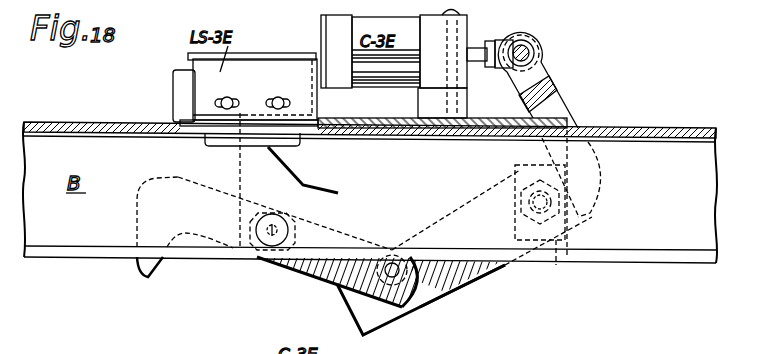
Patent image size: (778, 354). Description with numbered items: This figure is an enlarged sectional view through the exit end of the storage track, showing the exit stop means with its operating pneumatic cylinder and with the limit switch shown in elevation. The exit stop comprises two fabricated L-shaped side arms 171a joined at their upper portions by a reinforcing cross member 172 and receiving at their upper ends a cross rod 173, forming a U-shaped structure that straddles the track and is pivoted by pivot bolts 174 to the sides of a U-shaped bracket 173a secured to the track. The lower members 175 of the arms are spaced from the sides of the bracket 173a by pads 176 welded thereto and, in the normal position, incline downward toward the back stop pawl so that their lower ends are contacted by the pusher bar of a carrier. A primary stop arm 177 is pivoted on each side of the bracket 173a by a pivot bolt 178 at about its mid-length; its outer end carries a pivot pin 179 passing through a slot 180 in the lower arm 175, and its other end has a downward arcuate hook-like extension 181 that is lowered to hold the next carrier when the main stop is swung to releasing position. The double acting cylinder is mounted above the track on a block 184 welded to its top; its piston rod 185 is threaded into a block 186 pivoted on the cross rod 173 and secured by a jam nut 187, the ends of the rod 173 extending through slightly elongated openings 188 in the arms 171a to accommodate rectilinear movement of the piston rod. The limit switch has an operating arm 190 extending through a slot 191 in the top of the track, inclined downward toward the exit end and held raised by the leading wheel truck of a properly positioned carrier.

The side arm 171a is at (468, 272).
The reinforcing cross member 172 is at (560, 89).
The cross rod 173 is at (535, 53).
The U-shaped bracket 173a is at (240, 164).
The pivot bolt 174 is at (580, 217).
The lower member 175 is at (377, 322).
The pad 176 is at (571, 209).
The primary stop arm 177 is at (294, 278).
The pivot bolt 178 is at (273, 214).
The pivot pin 179 is at (392, 265).
The slot 180 is at (438, 291).
The hook-like extension 181 is at (140, 262).
The block 184 is at (418, 96).
The piston rod 185 is at (476, 47).
The block 186 is at (528, 31).
The jam nut 187 is at (492, 67).
The elongated opening 188 is at (540, 43).
The operating arm 190 is at (340, 193).
The slot 191 is at (345, 135).